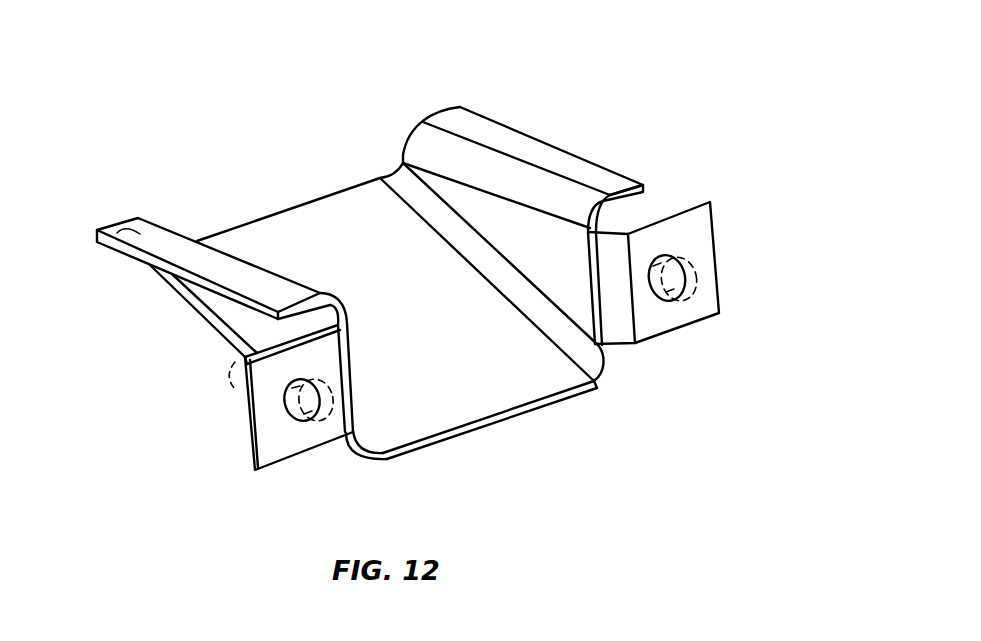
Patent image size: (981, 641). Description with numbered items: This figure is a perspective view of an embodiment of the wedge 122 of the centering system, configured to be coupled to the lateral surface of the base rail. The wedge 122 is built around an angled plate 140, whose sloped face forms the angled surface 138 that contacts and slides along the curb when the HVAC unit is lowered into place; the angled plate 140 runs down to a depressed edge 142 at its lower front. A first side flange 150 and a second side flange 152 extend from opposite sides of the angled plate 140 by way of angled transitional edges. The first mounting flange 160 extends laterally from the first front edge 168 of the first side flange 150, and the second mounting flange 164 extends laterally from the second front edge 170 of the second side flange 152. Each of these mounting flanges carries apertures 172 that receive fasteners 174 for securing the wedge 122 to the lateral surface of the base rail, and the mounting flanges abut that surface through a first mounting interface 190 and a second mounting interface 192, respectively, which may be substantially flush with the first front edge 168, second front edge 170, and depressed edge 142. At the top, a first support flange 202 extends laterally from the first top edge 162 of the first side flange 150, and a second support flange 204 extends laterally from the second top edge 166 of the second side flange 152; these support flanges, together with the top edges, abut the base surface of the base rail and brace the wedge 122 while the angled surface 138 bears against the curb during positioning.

The wedge 122 is at (413, 270).
The angled surface 138 is at (497, 434).
The angled plate 140 is at (461, 413).
The depressed edge 142 is at (527, 412).
The first side flange 150 is at (233, 308).
The second side flange 152 is at (560, 263).
The first mounting flange 160 is at (296, 443).
The first top edge 162 is at (196, 244).
The second mounting flange 164 is at (707, 220).
The second top edge 166 is at (508, 175).
The first front edge 168 is at (357, 383).
The second front edge 170 is at (610, 307).
The apertures 172 is at (289, 410).
The fasteners 174 is at (233, 383).
The first mounting interface 190 is at (281, 452).
The second mounting interface 192 is at (673, 317).
The first support flange 202 is at (97, 237).
The second support flange 204 is at (477, 130).